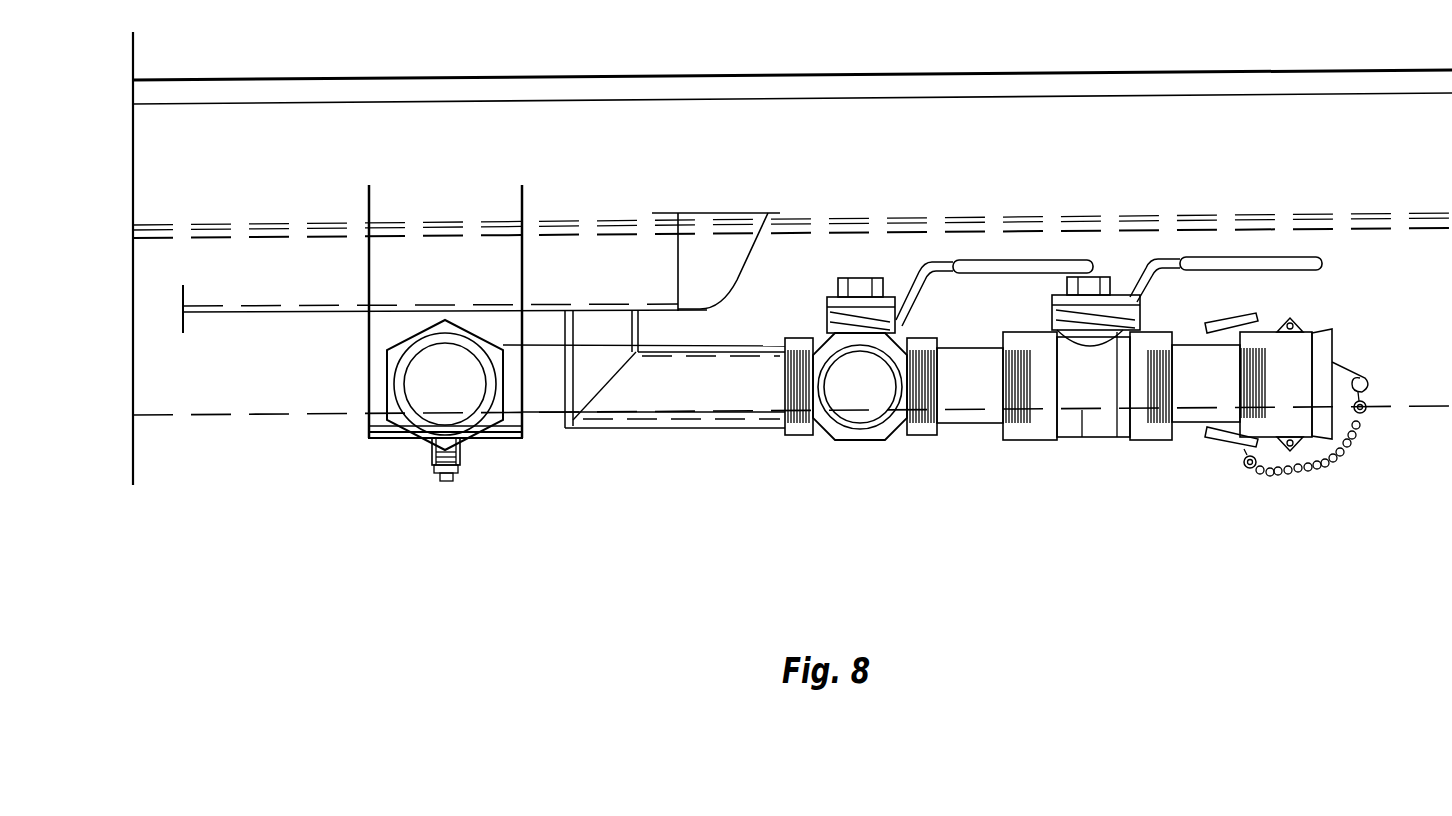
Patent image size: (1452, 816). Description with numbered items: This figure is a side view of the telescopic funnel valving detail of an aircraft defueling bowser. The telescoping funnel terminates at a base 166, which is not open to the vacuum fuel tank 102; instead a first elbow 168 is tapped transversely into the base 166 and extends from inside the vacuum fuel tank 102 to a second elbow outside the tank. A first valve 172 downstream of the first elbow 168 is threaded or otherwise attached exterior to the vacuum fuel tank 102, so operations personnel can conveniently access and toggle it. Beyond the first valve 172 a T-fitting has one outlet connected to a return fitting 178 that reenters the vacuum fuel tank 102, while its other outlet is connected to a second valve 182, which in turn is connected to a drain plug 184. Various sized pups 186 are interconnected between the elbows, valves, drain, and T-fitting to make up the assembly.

The vacuum fuel tank 102 is at (628, 279).
The base 166 is at (355, 432).
The first elbow 168 is at (539, 435).
The first valve 172 is at (845, 410).
The return fitting 178 is at (770, 345).
The second valve 182 is at (1082, 438).
The drain plug 184 is at (1300, 448).
The pups 186 is at (967, 430).